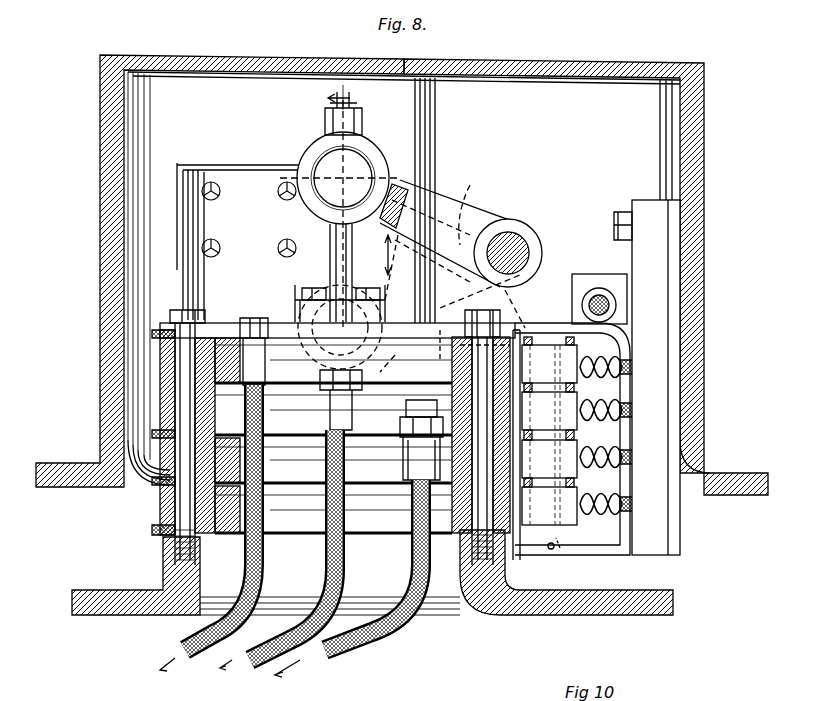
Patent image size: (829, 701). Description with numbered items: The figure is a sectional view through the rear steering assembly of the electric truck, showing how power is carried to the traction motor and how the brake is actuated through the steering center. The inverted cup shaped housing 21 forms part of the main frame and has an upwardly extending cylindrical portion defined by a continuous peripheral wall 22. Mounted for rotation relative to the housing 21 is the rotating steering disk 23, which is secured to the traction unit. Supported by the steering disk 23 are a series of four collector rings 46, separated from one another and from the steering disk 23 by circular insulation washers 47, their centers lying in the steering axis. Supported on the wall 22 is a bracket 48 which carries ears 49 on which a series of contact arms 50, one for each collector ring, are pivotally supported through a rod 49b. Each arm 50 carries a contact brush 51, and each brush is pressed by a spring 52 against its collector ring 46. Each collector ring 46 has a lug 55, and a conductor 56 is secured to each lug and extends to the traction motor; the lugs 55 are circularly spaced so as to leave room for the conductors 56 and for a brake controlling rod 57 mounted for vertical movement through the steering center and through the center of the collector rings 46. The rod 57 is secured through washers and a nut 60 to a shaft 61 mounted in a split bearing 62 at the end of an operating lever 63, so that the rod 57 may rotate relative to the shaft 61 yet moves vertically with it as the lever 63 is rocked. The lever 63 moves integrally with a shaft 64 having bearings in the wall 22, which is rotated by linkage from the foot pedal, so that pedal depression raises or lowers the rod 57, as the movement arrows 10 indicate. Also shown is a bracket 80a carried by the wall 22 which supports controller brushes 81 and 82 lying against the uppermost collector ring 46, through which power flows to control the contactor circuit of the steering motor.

The direction of movement arrows 10 is at (342, 249).
The inverted cup shaped housing 21 is at (62, 463).
The peripheral wall 22 is at (705, 170).
The rotating steering disk 23 is at (104, 608).
The collector rings 46 is at (160, 360).
The circular insulation washers 47 is at (153, 334).
The bracket 48 is at (665, 245).
The ears 49 is at (560, 325).
The rod 49b is at (575, 552).
The contact arms 50 is at (541, 358).
The contact brushes 51 is at (516, 330).
The springs 52 is at (612, 345).
The lugs 55 is at (252, 320).
The conductors 56 is at (212, 633).
The brake controlling rod 57 is at (330, 236).
The nut 60 is at (358, 136).
The shaft 61 is at (362, 165).
The split bearing 62 is at (316, 152).
The operating lever 63 is at (452, 246).
The shaft 64 is at (520, 243).
The bracket 80a is at (257, 193).
The controller brush 81 is at (430, 325).
The controller brush 82 is at (298, 320).